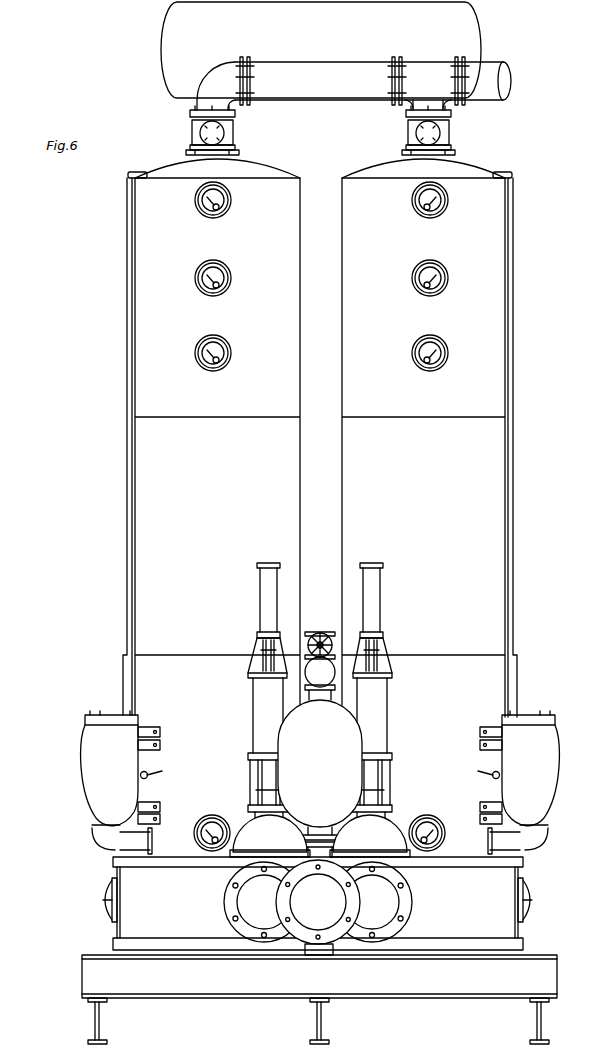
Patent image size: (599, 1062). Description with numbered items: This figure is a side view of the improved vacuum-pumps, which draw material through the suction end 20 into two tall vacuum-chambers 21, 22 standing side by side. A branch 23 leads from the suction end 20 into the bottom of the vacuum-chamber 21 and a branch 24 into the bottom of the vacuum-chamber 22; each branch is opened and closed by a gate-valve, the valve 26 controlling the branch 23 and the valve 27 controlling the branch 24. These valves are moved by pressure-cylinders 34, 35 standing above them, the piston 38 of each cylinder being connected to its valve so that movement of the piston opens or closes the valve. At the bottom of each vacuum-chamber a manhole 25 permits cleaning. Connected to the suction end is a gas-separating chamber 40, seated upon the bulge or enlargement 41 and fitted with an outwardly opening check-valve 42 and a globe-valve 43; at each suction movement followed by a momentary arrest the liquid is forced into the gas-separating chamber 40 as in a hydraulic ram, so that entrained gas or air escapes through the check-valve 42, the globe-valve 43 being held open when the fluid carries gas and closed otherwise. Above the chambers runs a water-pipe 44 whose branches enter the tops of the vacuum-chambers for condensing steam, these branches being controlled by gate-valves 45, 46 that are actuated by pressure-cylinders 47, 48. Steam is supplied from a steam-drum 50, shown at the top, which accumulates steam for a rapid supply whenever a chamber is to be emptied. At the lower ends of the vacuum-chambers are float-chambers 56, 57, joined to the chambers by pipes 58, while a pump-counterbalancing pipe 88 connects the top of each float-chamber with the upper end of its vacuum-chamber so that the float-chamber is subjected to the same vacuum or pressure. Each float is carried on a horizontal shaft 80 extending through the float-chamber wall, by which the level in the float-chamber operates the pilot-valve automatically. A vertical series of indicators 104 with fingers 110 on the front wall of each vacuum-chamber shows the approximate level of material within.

The suction end 20 is at (318, 907).
The vacuum-chamber 21 is at (217, 437).
The vacuum-chamber 22 is at (423, 438).
The branch 23 is at (264, 902).
The branch 24 is at (366, 910).
The manhole 25 is at (110, 903).
The valve 26 is at (270, 836).
The valve 27 is at (370, 836).
The pressure-cylinder 34 is at (269, 690).
The pressure-cylinder 35 is at (371, 690).
The piston 38 is at (507, 400).
The gas-separating chamber 40 is at (320, 763).
The bulge or enlargement 41 is at (311, 838).
The check-valve 42 is at (320, 677).
The globe-valve 43 is at (320, 636).
The water-pipe 44 is at (354, 83).
The valve 45 is at (236, 137).
The valve 46 is at (453, 137).
The pressure-cylinder 47 is at (200, 137).
The pressure-cylinder 48 is at (415, 136).
The steam-drum 50 is at (321, 50).
The float-chamber 56 is at (120, 768).
The float-chamber 57 is at (519, 768).
The pipe 58 is at (152, 843).
The horizontal shaft 80 is at (320, 768).
The pump-counterbalancing pipe 88 is at (133, 381).
The indicator 104 is at (200, 391).
The finger 110 is at (225, 355).